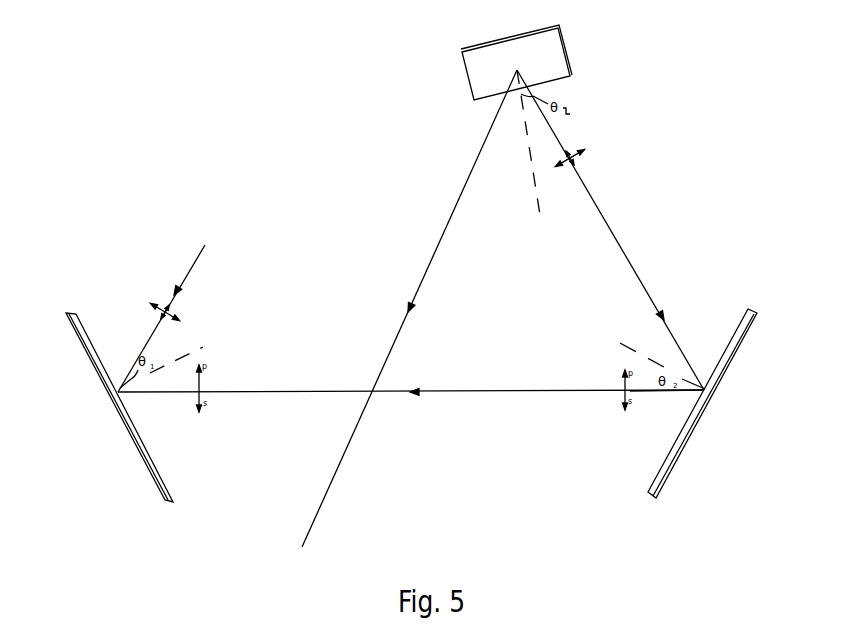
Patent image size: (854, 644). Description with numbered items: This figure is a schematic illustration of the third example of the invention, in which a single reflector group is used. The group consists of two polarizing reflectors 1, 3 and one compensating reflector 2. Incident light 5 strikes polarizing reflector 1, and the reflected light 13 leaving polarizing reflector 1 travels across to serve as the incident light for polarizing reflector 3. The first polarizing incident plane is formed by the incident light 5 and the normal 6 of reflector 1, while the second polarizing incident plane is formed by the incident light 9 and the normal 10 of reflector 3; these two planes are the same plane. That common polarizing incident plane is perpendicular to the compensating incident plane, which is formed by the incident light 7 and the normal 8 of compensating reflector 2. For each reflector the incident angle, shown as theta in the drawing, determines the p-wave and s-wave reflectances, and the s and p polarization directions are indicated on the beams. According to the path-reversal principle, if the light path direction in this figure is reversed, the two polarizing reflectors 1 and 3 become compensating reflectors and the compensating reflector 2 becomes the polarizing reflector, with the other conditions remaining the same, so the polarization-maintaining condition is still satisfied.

The polarizing reflector 1 is at (92, 343).
The compensating reflector 2 is at (477, 73).
The polarizing reflector 3 is at (727, 345).
The incident light 5 is at (217, 277).
The normal 6 is at (213, 337).
The incident light 7 is at (587, 185).
The normal 8 is at (530, 172).
The incident light 9 is at (665, 395).
The normal 10 is at (612, 335).
The reflected light 13 is at (183, 415).